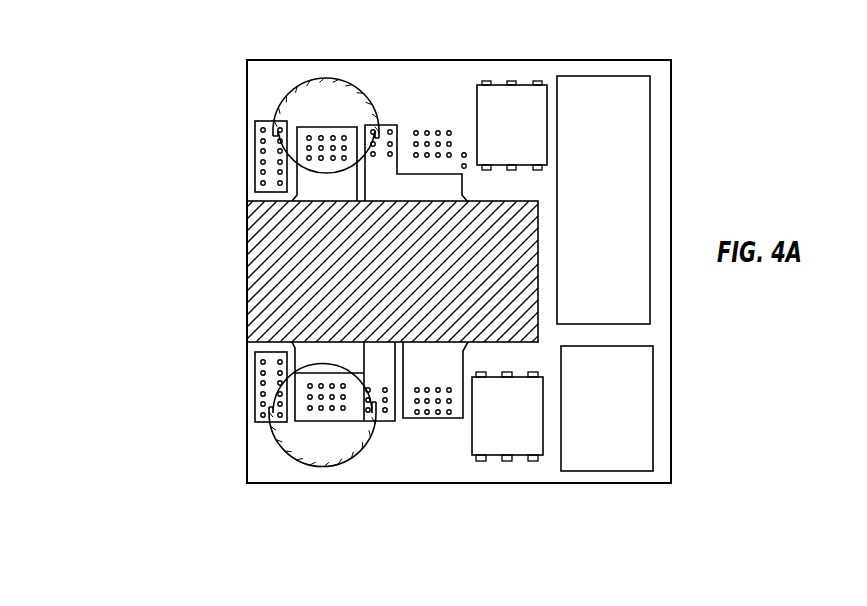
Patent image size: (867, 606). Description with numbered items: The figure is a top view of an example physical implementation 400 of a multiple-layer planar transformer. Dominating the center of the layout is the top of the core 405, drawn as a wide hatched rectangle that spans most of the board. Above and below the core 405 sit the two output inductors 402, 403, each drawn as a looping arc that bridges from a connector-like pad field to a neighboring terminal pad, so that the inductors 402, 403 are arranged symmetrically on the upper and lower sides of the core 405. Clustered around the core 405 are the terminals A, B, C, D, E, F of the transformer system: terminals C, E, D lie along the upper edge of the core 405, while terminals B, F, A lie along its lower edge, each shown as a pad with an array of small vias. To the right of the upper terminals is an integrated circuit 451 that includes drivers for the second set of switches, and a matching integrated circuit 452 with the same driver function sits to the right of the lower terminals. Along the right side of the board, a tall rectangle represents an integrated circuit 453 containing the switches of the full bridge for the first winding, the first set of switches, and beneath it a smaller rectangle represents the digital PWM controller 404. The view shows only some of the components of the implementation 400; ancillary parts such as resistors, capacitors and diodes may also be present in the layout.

The physical implementation 400 is at (90, 154).
The output inductor 402 is at (325, 78).
The output inductor 403 is at (313, 466).
The digital PWM controller 404 is at (626, 403).
The core 405 is at (272, 270).
The integrated circuit 451 is at (503, 103).
The integrated circuit 452 is at (497, 437).
The integrated circuit 453 is at (617, 112).
The terminal A is at (433, 418).
The terminal B is at (337, 418).
The terminal C is at (312, 124).
The terminal D is at (433, 124).
The terminal E is at (386, 119).
The terminal F is at (383, 428).